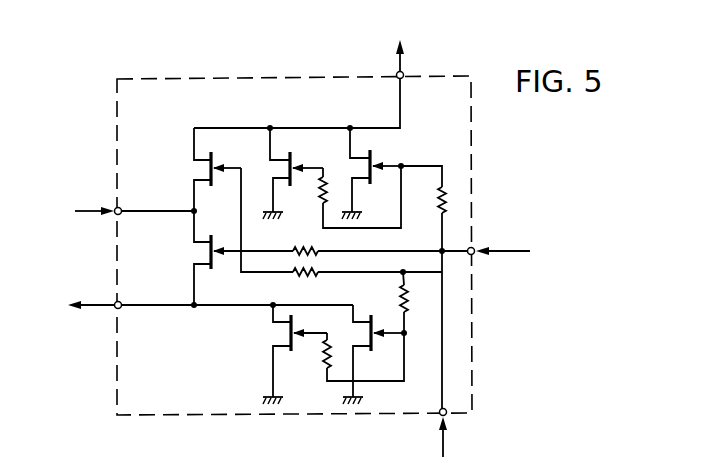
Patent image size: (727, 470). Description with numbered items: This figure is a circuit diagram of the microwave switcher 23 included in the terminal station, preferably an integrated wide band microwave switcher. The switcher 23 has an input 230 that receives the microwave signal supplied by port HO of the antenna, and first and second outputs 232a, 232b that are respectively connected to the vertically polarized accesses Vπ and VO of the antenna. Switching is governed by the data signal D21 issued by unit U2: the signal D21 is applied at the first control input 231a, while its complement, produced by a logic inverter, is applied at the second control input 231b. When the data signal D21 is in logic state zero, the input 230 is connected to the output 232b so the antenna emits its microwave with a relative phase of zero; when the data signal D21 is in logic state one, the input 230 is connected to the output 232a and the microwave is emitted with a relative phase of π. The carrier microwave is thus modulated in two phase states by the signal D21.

The microwave switcher 23 is at (458, 164).
The input 230 is at (115, 207).
The first control input 231a is at (477, 247).
The second control input 231b is at (449, 416).
The first output 232a is at (115, 302).
The second output 232b is at (404, 70).
The data signal D21 is at (519, 253).